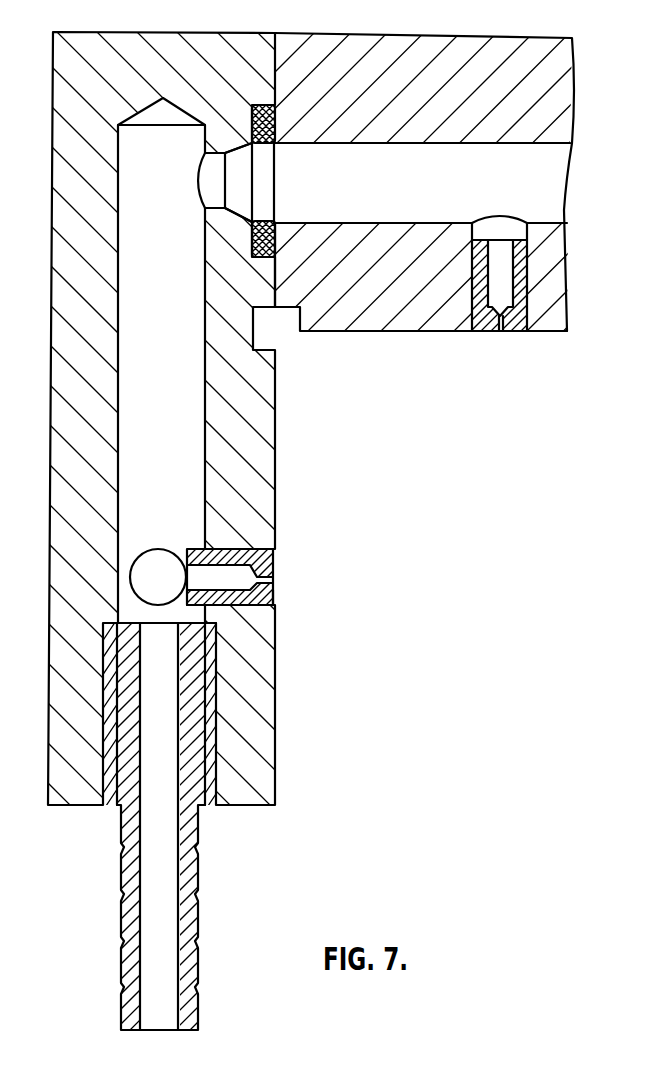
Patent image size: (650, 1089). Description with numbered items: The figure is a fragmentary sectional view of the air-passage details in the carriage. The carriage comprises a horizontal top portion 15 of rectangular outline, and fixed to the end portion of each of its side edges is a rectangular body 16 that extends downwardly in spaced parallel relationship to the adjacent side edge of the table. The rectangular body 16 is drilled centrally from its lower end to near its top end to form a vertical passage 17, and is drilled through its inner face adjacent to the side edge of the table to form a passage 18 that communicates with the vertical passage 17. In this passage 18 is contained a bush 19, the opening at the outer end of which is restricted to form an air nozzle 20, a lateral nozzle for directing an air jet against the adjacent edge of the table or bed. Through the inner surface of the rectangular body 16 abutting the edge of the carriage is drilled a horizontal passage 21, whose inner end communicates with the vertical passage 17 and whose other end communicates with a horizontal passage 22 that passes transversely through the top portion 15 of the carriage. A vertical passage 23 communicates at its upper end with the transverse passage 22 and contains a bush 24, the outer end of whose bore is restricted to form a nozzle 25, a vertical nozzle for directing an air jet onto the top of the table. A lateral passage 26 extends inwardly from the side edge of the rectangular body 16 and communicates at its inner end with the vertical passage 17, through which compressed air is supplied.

The horizontal top portion 15 is at (472, 45).
The rectangular body 16 is at (51, 395).
The vertical passage 17 is at (128, 495).
The passage 18 is at (248, 549).
The bush 19 is at (272, 605).
The air nozzle 20 is at (272, 579).
The horizontal passage 21 is at (242, 155).
The horizontal passage 22 is at (383, 217).
The vertical passage 23 is at (513, 232).
The bush 24 is at (482, 305).
The nozzle 25 is at (500, 318).
The passage 26 is at (130, 578).